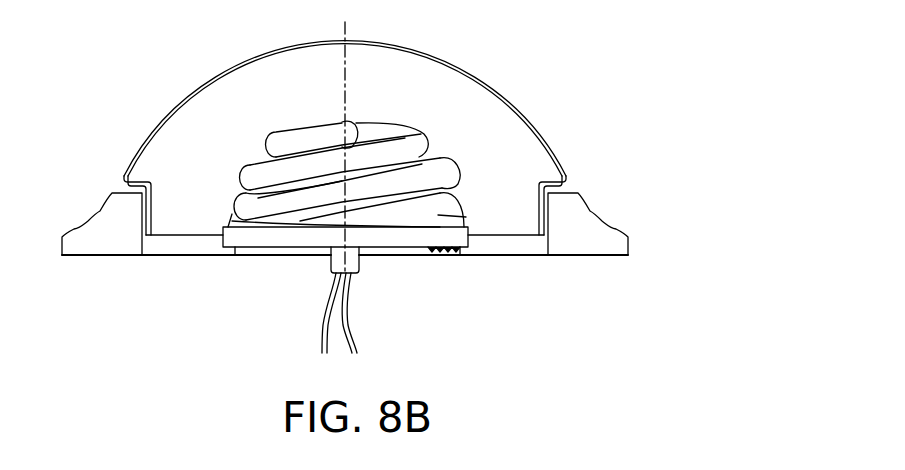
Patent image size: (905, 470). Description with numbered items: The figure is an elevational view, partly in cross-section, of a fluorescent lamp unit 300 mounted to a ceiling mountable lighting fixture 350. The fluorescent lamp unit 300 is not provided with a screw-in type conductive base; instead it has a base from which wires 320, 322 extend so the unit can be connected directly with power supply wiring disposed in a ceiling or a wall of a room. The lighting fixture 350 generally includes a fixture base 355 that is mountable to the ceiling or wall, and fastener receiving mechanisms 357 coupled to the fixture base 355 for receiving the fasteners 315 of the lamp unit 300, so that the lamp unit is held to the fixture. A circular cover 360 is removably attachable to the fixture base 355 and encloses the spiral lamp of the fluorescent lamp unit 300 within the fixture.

The fluorescent lamp unit 300 is at (307, 117).
The fasteners 315 is at (443, 256).
The wires 320 is at (322, 330).
The second electrical lead wire 322 is at (349, 338).
The lighting fixture 350 is at (540, 110).
The fixture base 355 is at (583, 217).
The fastener receiving mechanisms 357 is at (445, 255).
The circular cover 360 is at (463, 127).